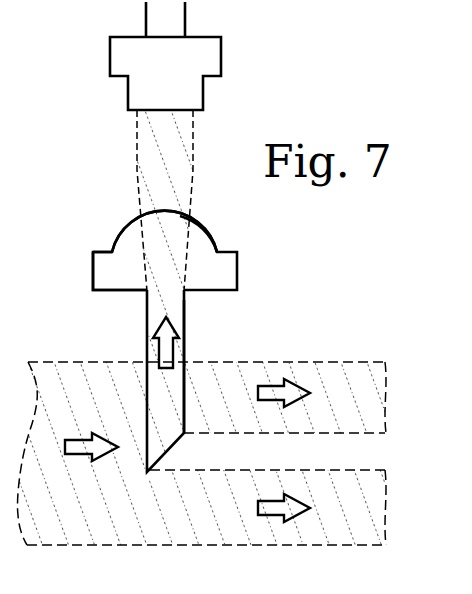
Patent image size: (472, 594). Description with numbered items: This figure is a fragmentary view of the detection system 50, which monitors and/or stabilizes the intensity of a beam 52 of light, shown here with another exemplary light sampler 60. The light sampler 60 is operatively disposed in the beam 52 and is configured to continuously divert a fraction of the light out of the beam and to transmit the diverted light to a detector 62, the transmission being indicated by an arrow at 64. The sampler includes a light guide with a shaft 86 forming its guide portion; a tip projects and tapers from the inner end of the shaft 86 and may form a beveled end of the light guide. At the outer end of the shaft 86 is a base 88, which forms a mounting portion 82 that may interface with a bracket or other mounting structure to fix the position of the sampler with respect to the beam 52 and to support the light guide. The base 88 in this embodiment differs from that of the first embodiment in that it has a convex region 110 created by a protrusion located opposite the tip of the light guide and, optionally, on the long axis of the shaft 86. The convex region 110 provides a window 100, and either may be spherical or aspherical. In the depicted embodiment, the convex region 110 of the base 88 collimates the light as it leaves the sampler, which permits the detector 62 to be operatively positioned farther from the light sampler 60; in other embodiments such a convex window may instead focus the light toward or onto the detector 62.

The detection system 50 is at (75, 150).
The beam 52 is at (55, 362).
The light sampler 60 is at (250, 258).
The detector 62 is at (221, 57).
The arrow indicating transmission of diverted light 64 is at (147, 344).
The mounting portion 82 is at (93, 253).
The shaft 86 is at (186, 347).
The base 88 is at (93, 284).
The window 100 is at (168, 211).
The convex region 110 is at (196, 226).